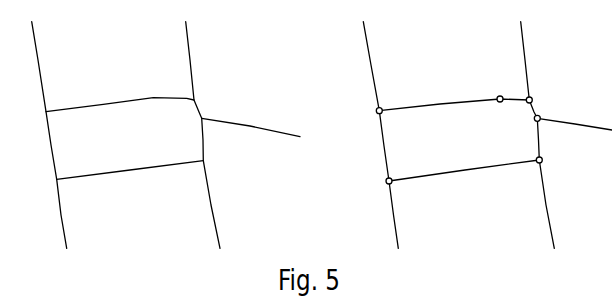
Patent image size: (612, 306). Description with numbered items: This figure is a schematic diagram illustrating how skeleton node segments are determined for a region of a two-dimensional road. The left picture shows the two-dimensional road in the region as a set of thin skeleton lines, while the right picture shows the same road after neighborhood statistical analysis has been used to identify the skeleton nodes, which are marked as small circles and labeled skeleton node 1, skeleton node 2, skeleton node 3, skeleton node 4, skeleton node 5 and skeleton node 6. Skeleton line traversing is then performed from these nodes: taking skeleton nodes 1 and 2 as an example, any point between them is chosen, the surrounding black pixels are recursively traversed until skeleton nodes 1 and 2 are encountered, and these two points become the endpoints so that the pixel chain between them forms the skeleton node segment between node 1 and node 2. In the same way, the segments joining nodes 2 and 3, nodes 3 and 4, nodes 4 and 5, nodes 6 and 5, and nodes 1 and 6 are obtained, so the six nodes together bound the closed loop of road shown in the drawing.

The skeleton node 1 is at (389, 123).
The skeleton node 2 is at (503, 113).
The skeleton node 3 is at (542, 90).
The skeleton node 4 is at (549, 132).
The skeleton node 5 is at (534, 175).
The skeleton node 6 is at (401, 193).